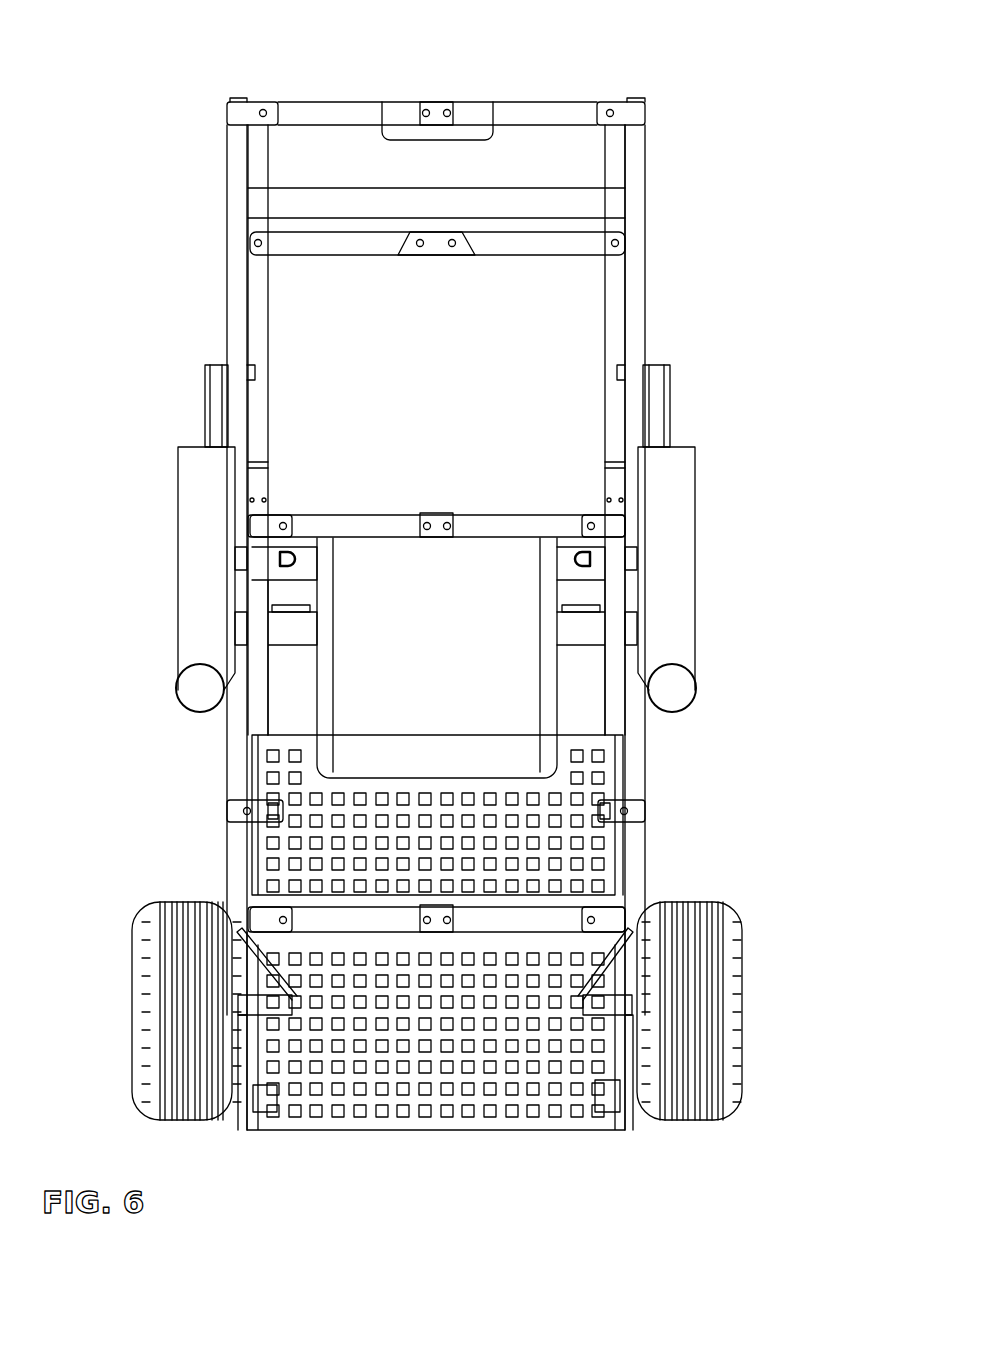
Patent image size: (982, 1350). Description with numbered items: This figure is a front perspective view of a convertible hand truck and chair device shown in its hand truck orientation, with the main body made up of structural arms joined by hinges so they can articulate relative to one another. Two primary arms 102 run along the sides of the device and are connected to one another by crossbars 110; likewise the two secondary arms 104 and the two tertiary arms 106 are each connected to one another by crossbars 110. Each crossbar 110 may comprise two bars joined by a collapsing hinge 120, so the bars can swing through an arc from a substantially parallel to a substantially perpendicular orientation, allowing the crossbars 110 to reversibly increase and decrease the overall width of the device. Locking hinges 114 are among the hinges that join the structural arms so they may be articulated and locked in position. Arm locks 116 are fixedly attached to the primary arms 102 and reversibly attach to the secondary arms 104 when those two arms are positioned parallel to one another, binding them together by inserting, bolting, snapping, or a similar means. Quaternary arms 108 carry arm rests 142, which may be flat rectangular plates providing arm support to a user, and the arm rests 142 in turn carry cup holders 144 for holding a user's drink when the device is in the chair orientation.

The primary arms 102 is at (243, 190).
The secondary arms 104 is at (620, 718).
The tertiary arms 106 is at (610, 320).
The quaternary arms 108 is at (205, 400).
The crossbars 110 is at (337, 110).
The locking hinges 114 is at (640, 815).
The arm locks 116 is at (607, 1010).
The collapsing hinges 120 is at (440, 108).
The arm rests 142 is at (200, 570).
The cup holders 144 is at (178, 690).